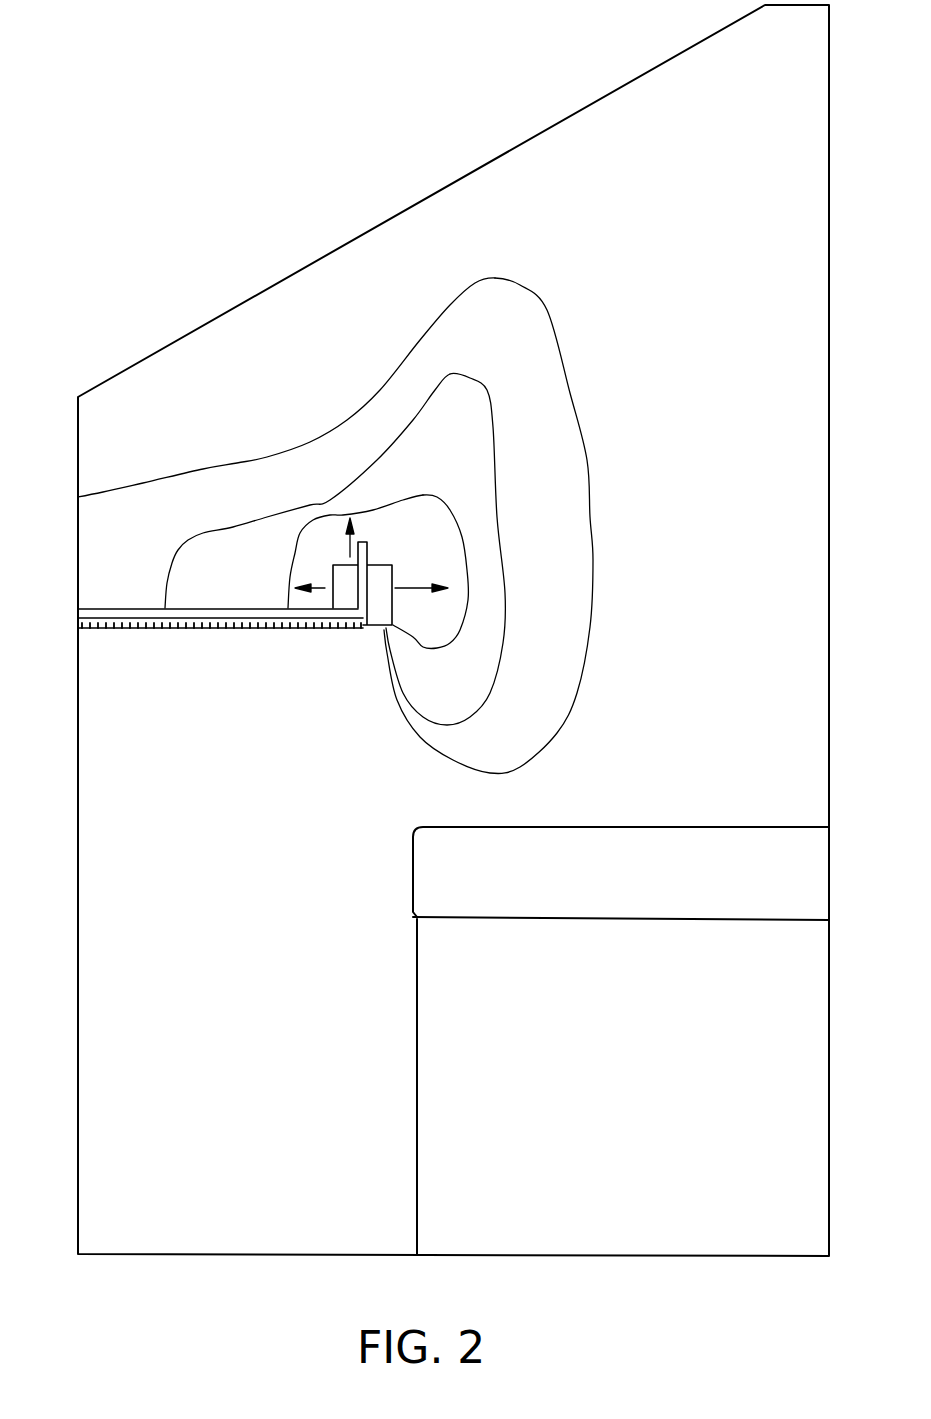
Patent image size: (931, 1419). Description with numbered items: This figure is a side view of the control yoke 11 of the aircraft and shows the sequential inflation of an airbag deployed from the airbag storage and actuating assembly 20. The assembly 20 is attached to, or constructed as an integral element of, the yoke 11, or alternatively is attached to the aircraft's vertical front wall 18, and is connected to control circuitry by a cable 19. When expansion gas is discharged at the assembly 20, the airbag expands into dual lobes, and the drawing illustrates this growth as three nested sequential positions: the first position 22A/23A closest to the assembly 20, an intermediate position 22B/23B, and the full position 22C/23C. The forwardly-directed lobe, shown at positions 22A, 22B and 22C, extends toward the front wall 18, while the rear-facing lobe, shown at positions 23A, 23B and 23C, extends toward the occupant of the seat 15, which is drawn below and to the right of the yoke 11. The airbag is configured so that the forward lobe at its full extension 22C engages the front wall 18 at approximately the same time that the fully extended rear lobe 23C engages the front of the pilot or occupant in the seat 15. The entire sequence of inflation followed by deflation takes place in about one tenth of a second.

The yoke 11 is at (250, 633).
The seat 15 is at (643, 845).
The front wall 18 is at (79, 413).
The cable 19 is at (148, 629).
The airbag storage and actuating assembly 20 is at (382, 613).
The first sequential airbag position of lobe 22 22A is at (289, 580).
The second sequential airbag position of lobe 22 22B is at (188, 540).
The third sequential airbag position of lobe 22 22C is at (203, 469).
The first sequential airbag position of lobe 23 23A is at (465, 448).
The second sequential airbag position of lobe 23 23B is at (521, 338).
The third sequential airbag position of lobe 23 23C is at (589, 479).